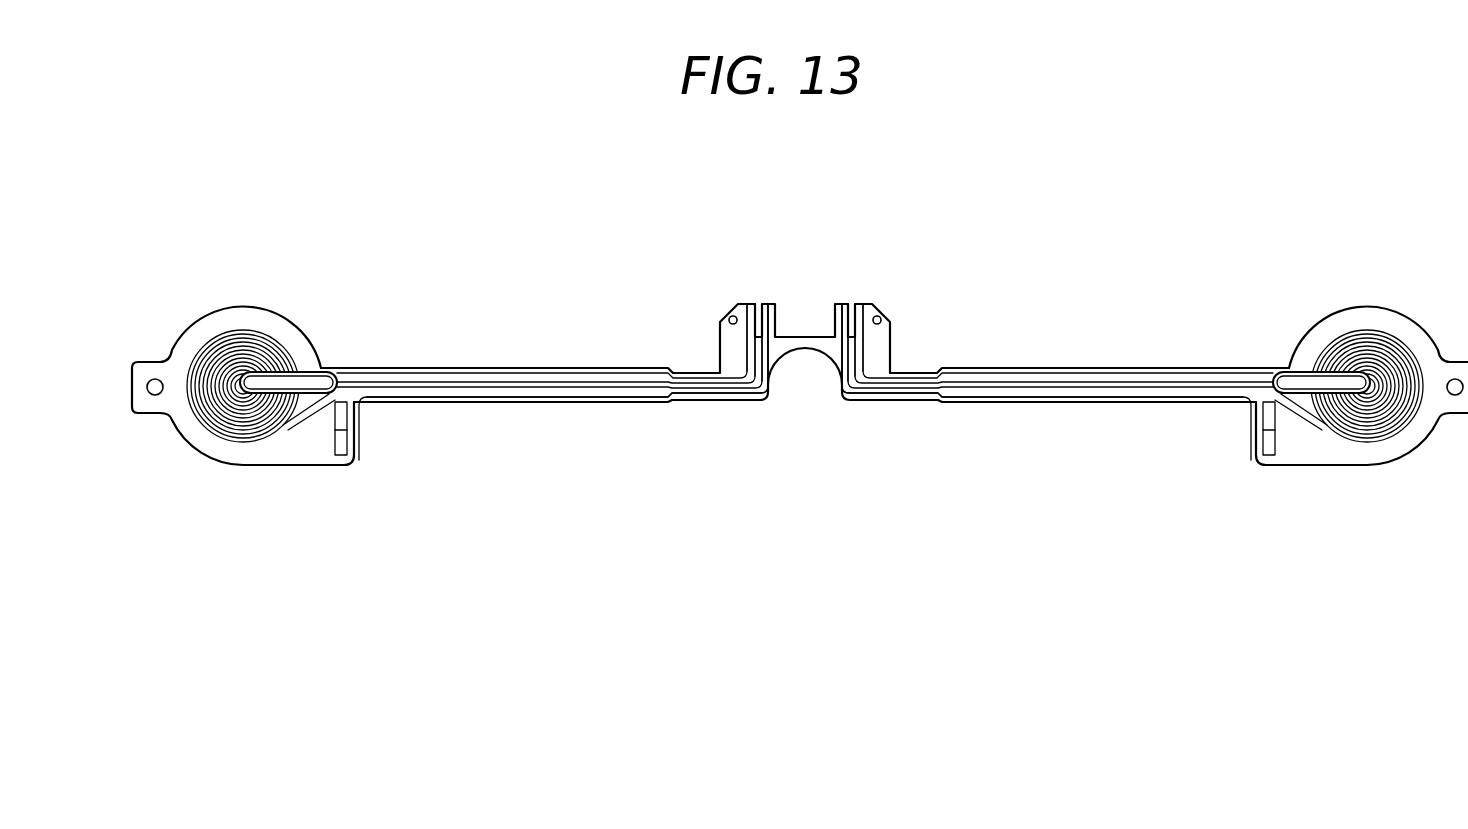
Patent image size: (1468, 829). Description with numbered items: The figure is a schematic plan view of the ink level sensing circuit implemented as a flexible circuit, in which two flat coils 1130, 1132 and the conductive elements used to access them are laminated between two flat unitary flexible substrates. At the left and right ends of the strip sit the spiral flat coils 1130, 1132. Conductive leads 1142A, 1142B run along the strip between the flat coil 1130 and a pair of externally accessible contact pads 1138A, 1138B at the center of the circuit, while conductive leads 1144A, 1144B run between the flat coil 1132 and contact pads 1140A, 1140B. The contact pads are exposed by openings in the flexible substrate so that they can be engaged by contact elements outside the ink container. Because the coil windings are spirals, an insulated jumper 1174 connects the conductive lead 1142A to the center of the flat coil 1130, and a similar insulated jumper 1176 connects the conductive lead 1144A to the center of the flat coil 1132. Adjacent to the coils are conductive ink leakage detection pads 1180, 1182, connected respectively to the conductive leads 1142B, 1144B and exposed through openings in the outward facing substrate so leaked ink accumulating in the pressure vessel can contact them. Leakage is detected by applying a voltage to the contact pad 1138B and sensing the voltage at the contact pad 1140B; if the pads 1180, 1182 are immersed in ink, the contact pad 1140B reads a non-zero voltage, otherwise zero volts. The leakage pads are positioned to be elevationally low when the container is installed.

The flat coil 1130 is at (267, 337).
The flat coil 1132 is at (1370, 337).
The insulated jumper 1174 is at (318, 374).
The insulated jumper 1176 is at (1283, 376).
The conductive lead 1142A is at (588, 377).
The conductive lead 1142B is at (590, 392).
The conductive lead 1144A is at (1090, 374).
The conductive lead 1144B is at (1077, 394).
The contact pad 1138A is at (768, 303).
The contact pad 1138B is at (745, 303).
The contact pad 1140A is at (860, 303).
The contact pad 1140B is at (847, 303).
The ink leakage detection pad 1180 is at (347, 438).
The ink leakage detection pad 1182 is at (1262, 440).